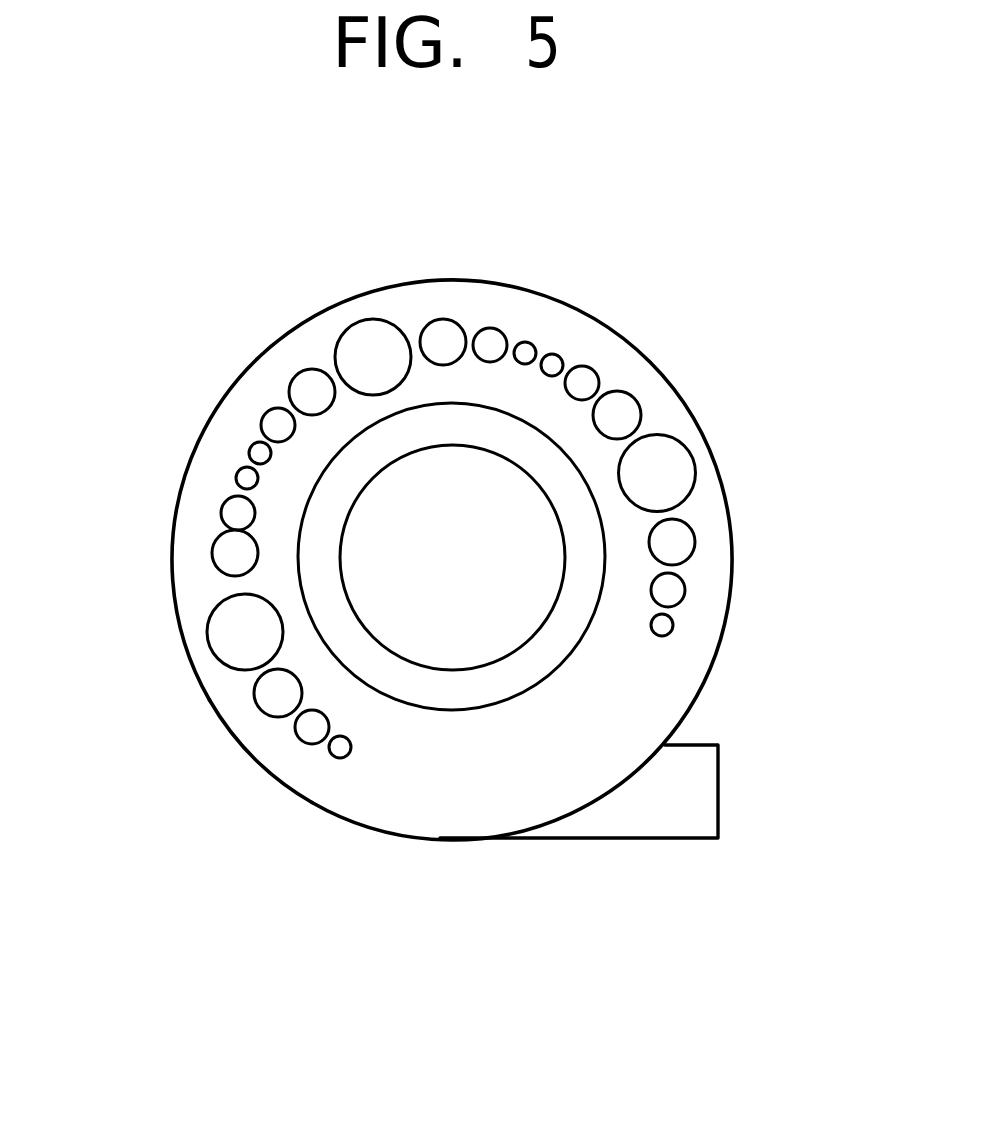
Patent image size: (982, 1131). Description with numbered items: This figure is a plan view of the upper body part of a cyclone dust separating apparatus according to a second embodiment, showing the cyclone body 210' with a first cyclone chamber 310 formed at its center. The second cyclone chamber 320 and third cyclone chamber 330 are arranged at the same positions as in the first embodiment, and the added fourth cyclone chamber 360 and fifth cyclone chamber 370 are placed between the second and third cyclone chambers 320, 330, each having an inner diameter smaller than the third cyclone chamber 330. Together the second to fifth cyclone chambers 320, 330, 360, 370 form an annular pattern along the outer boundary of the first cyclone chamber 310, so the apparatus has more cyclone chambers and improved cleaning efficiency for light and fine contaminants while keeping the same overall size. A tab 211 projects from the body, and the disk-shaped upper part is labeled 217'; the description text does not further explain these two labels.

The cyclone body 210' is at (257, 788).
The protrusion tab 211 is at (718, 788).
The rotating disk 217' is at (452, 608).
The first cyclone chamber 310 is at (478, 604).
The second cyclone chamber 320 is at (357, 319).
The third cyclone chamber 330 is at (297, 375).
The fourth cyclone chamber 360 is at (277, 416).
The fifth cyclone chamber 370 is at (256, 452).